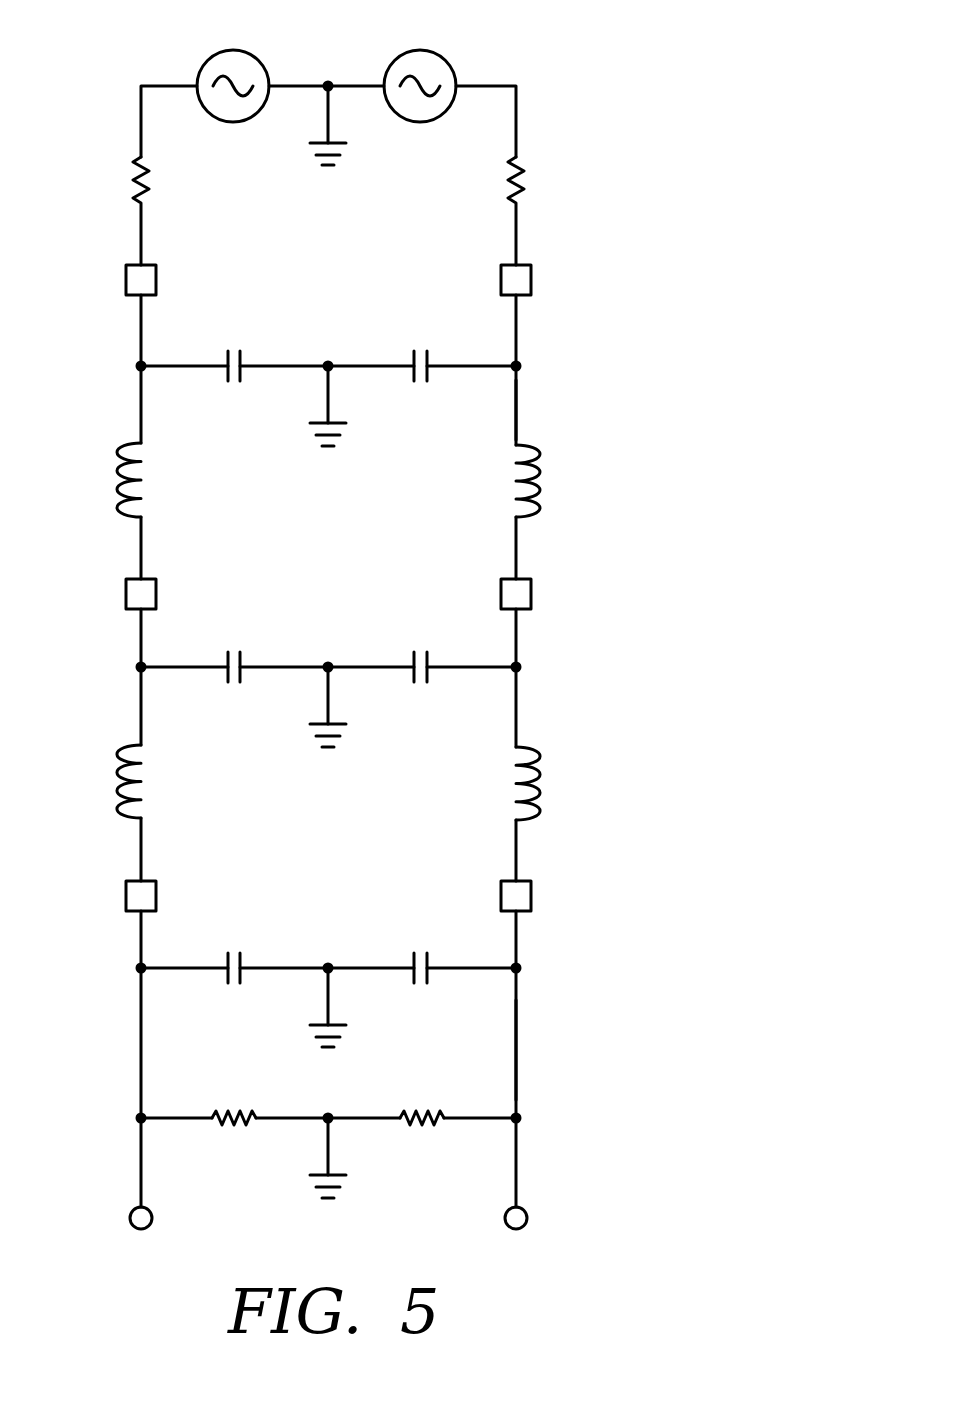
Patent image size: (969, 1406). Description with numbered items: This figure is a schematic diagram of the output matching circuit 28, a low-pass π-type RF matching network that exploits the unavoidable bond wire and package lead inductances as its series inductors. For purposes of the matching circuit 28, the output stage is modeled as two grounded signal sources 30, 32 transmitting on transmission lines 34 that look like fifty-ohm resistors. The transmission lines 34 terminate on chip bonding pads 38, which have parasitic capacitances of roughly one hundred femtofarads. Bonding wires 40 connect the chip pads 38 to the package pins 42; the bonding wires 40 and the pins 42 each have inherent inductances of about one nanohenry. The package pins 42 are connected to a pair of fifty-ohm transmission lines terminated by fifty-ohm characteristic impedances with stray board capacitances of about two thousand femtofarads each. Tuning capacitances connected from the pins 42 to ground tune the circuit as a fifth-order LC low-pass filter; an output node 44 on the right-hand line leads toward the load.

The matching circuit 28 is at (580, 847).
The grounded signal source 30 is at (400, 72).
The grounded signal source 32 is at (250, 70).
The transmission lines 34 is at (141, 98).
The chip bonding pads 38 is at (522, 278).
The bonding wires 40 is at (516, 410).
The package pins 42 is at (522, 592).
The output node 44 is at (516, 1043).